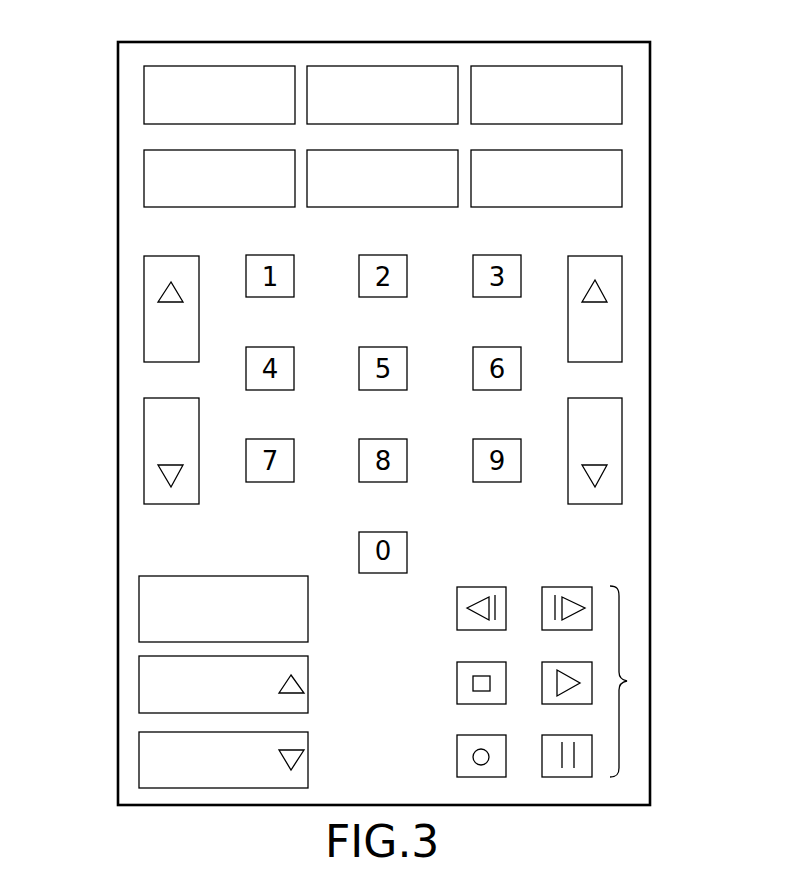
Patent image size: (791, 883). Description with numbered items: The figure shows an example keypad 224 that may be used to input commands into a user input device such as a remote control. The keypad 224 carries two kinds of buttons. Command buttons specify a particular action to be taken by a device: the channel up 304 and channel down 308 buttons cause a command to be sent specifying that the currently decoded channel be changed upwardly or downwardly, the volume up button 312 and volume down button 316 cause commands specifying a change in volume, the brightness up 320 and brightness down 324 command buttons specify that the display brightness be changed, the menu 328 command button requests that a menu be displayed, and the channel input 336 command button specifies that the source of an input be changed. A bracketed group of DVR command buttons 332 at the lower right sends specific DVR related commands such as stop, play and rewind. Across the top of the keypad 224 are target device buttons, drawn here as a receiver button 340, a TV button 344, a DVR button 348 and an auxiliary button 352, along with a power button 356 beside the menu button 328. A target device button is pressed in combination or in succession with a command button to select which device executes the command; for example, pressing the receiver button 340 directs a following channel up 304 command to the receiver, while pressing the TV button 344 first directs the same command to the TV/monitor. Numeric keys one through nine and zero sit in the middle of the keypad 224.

The keypad 224 is at (118, 42).
The power button 356 is at (144, 95).
The receiver button 340 is at (340, 66).
The TV button 344 is at (622, 100).
The menu command button 328 is at (144, 178).
The DVR button 348 is at (400, 207).
The auxiliary button 352 is at (622, 190).
The channel up button 304 is at (144, 312).
The channel down button 308 is at (144, 450).
The volume up button 312 is at (622, 302).
The volume down button 316 is at (622, 450).
The channel input command button 336 is at (139, 617).
The brightness up command button 320 is at (139, 678).
The brightness down command button 324 is at (139, 760).
The DVR command buttons 332 is at (627, 681).